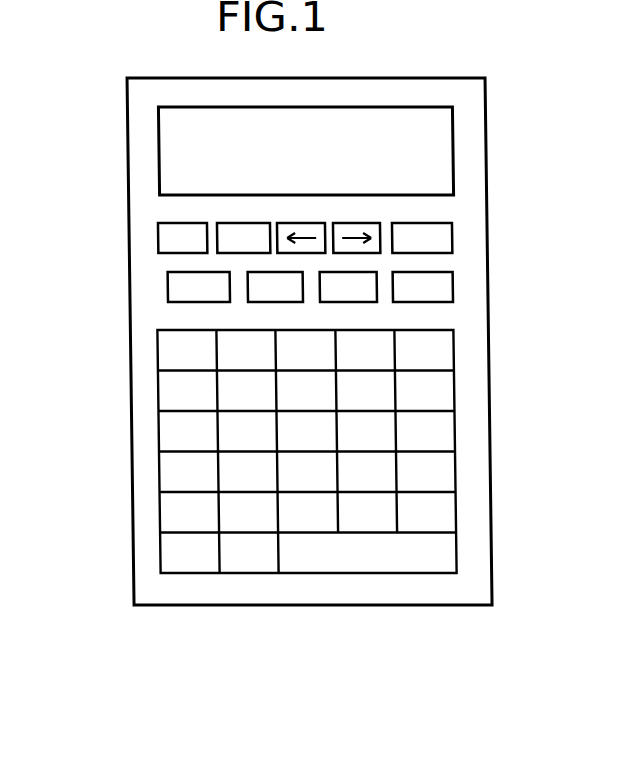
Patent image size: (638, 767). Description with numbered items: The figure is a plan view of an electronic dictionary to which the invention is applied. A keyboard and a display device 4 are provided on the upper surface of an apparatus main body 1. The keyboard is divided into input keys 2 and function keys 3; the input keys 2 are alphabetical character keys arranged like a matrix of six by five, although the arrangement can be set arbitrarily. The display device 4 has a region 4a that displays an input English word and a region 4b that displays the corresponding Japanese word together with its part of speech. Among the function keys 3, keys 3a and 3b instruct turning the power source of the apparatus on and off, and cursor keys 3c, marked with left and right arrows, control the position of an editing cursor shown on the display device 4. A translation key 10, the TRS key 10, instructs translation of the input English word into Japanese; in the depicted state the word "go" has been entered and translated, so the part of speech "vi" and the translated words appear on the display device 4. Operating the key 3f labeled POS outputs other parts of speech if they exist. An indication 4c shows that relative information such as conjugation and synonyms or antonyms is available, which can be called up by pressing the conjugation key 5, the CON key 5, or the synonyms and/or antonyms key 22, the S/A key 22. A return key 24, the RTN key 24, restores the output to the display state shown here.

The apparatus main body 1 is at (472, 94).
The input keys 2 is at (472, 329).
The function keys 3 is at (469, 222).
The power-on key 3a is at (158, 240).
The power-off key 3b is at (237, 223).
The cursor keys 3c is at (309, 223).
The POS key 3f is at (264, 302).
The display device 4 is at (452, 136).
The input English word display region 4a is at (168, 122).
The Japanese word display region 4b is at (168, 148).
The relative information indication 4c is at (452, 166).
The conjugation key 5 is at (168, 286).
The translation key 10 is at (412, 223).
The synonyms and/or antonyms key 22 is at (338, 302).
The return key 24 is at (410, 302).